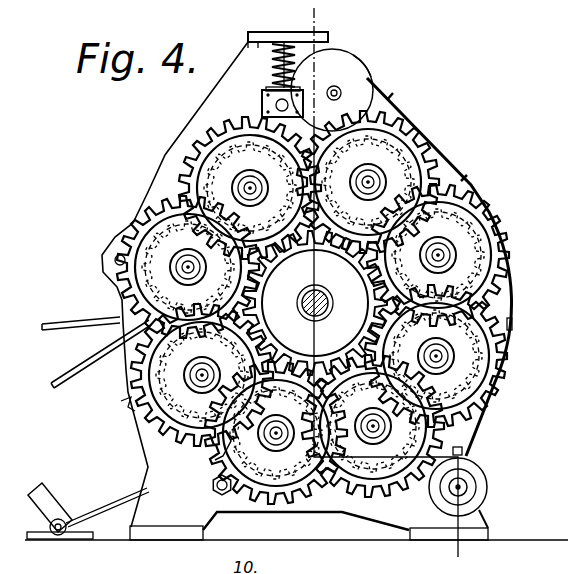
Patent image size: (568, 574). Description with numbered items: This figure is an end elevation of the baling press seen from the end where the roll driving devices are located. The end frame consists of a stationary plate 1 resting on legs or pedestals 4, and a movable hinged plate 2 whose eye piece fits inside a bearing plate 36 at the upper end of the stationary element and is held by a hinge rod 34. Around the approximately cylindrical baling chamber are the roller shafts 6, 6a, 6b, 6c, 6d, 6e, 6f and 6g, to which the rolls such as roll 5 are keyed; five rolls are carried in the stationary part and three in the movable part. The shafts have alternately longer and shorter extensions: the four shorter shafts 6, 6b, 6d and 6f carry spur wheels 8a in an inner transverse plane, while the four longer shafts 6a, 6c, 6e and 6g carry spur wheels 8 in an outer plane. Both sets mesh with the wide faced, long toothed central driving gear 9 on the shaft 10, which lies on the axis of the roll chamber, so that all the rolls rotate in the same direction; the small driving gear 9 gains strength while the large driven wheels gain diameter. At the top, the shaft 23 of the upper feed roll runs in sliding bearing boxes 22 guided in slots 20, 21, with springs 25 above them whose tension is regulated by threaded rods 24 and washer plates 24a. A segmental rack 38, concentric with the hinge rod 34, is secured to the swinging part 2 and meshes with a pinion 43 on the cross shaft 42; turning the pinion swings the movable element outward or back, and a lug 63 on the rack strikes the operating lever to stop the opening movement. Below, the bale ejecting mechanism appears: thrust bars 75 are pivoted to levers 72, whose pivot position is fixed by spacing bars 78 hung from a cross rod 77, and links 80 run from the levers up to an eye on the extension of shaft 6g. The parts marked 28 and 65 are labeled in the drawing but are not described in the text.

The stationary plate 1 is at (190, 137).
The movable hinged plate 2 is at (466, 170).
The legs or pedestals 4 is at (180, 515).
The roll 5 is at (266, 17).
The shaft 6 is at (249, 186).
The shaft 6a is at (186, 264).
The shaft 6b is at (198, 375).
The shaft 6c is at (273, 436).
The shaft 6d is at (375, 430).
The shaft 6e is at (438, 360).
The shaft 6f is at (438, 259).
The shaft 6g is at (368, 180).
The spur wheel 8 is at (313, 307).
The spur wheel 8a is at (313, 307).
The central driving gear 9 is at (315, 303).
The shaft 10 is at (330, 300).
The slot 20 is at (274, 68).
The slot 21 is at (265, 80).
The sliding bearing box 22 is at (262, 102).
The shaft 23 is at (357, 80).
The bolt or threaded rod 24 is at (192, 57).
The washer plate 24a is at (288, 28).
The spring 25 is at (298, 64).
The stops 28 is at (393, 98).
The hinge rod 34 is at (366, 74).
The bearing plate 36 is at (360, 50).
The rack 38 is at (210, 447).
The cross shaft 42 is at (463, 483).
The pinion 43 is at (478, 497).
The lug 63 is at (125, 408).
The lug 65 is at (115, 259).
The lever 72 is at (44, 490).
The thrust bar 75 is at (85, 308).
The cross rod 77 is at (212, 488).
The spacing bar 78 is at (135, 495).
The link 80 is at (101, 365).